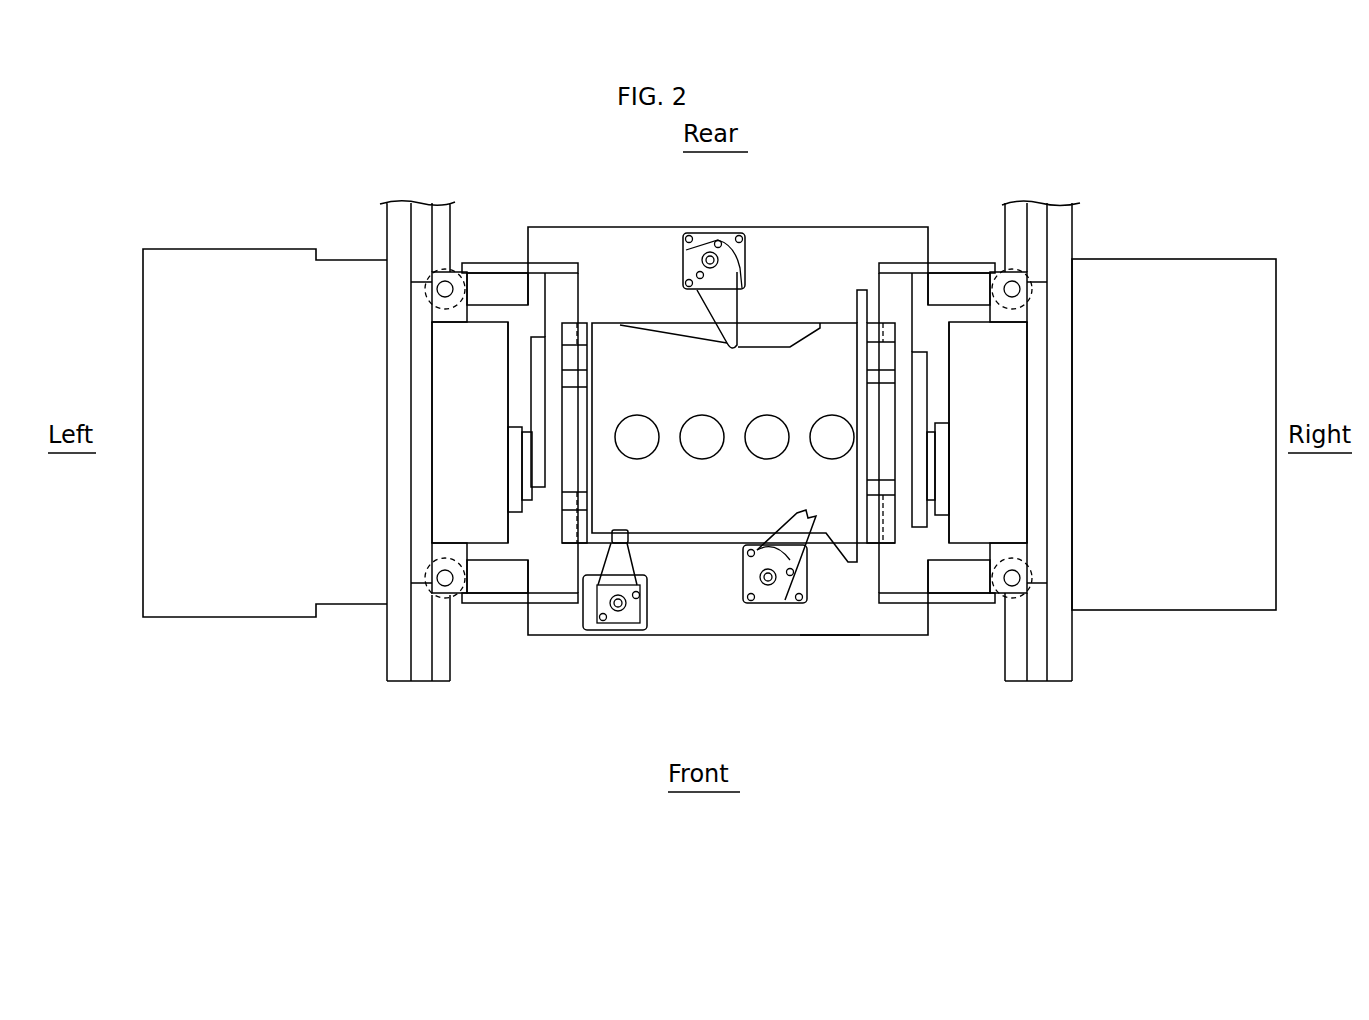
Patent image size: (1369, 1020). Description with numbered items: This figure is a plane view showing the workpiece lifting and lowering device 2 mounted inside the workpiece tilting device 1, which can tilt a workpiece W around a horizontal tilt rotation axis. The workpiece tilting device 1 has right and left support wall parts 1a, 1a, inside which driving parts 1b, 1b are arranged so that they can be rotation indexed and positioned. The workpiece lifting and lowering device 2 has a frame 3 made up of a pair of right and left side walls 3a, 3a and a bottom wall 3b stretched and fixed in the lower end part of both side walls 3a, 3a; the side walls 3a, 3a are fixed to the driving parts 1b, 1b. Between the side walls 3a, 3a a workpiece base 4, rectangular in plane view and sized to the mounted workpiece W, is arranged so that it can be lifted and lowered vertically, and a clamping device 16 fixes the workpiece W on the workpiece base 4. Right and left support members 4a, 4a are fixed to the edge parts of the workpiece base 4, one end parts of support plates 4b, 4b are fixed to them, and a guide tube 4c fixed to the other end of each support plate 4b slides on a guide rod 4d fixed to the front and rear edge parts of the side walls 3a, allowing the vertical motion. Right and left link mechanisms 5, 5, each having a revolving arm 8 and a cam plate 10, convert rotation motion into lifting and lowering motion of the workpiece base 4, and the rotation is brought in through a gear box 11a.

The workpiece tilting device 1 is at (1145, 230).
The support wall parts 1a is at (270, 249).
The driving parts 1b is at (420, 527).
The workpiece lifting and lowering device 2 is at (778, 215).
The frame 3 is at (733, 640).
The side walls 3a is at (430, 467).
The bottom wall 3b is at (830, 620).
The workpiece base 4 is at (697, 550).
The support members 4a is at (565, 580).
The support plates 4b is at (492, 263).
The guide tube 4c is at (432, 275).
The guide rod 4d is at (442, 287).
The link mechanisms 5 is at (537, 320).
The revolving arm 8 is at (527, 420).
The cam plate 10 is at (521, 375).
The gear box 11a is at (440, 348).
The clamping device 16 is at (708, 233).
The workpiece W is at (788, 338).